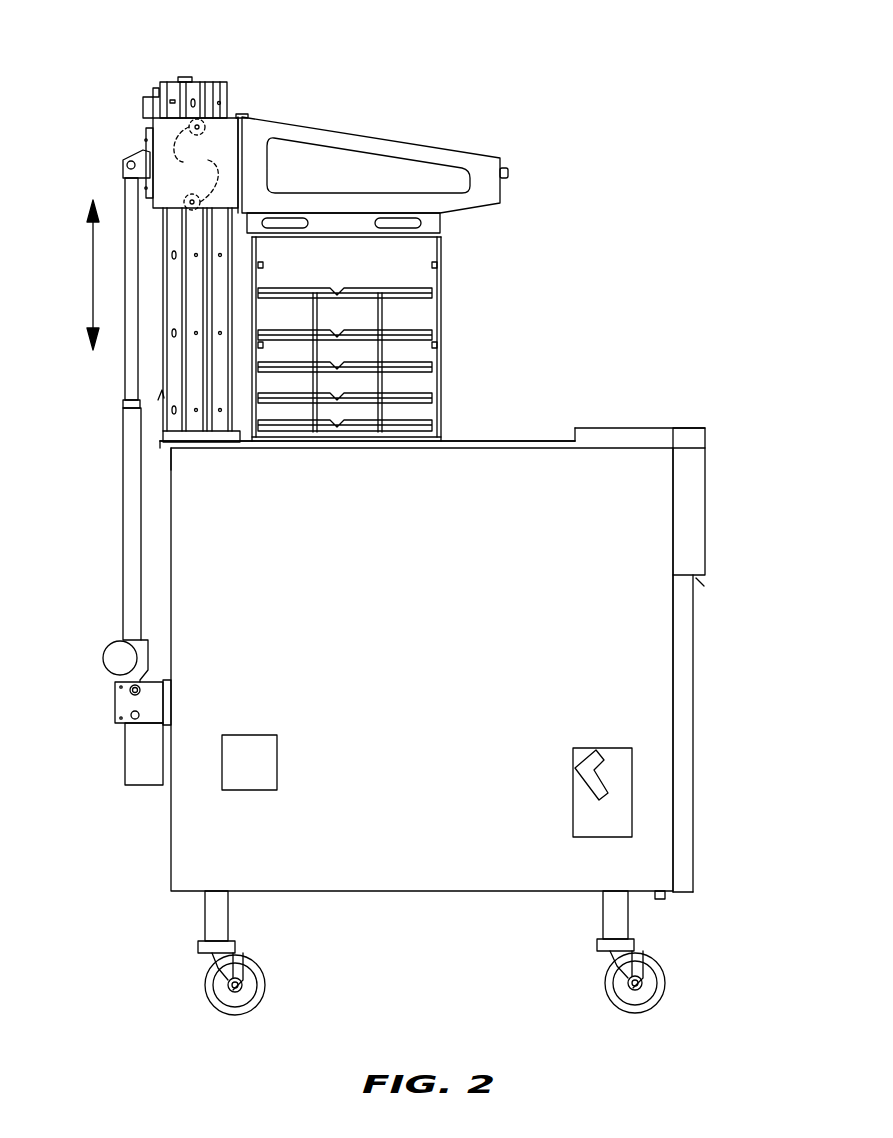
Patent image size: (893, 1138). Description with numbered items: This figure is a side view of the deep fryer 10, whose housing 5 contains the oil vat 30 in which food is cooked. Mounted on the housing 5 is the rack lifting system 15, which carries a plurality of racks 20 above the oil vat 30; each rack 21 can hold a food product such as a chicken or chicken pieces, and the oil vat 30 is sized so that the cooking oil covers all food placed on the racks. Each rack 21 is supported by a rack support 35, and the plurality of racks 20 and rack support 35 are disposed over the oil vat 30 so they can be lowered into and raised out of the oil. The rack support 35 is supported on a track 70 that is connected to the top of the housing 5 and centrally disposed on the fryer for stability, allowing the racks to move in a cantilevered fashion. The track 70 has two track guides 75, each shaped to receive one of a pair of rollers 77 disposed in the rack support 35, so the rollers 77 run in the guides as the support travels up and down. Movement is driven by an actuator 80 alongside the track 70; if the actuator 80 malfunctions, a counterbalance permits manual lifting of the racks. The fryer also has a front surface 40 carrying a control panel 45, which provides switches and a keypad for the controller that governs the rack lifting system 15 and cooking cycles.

The deep fryer 10 is at (582, 74).
The housing 5 is at (171, 838).
The rack lifting system 15 is at (126, 90).
The plurality of racks 20 is at (383, 339).
The rack 21 is at (288, 288).
The oil vat 30 is at (518, 441).
The rack support 35 is at (352, 140).
The front surface 40 is at (693, 648).
The control panel 45 is at (705, 478).
The track 70 is at (168, 82).
The track guides 75 is at (197, 92).
The rollers 77 is at (191, 164).
The actuator 80 is at (123, 410).